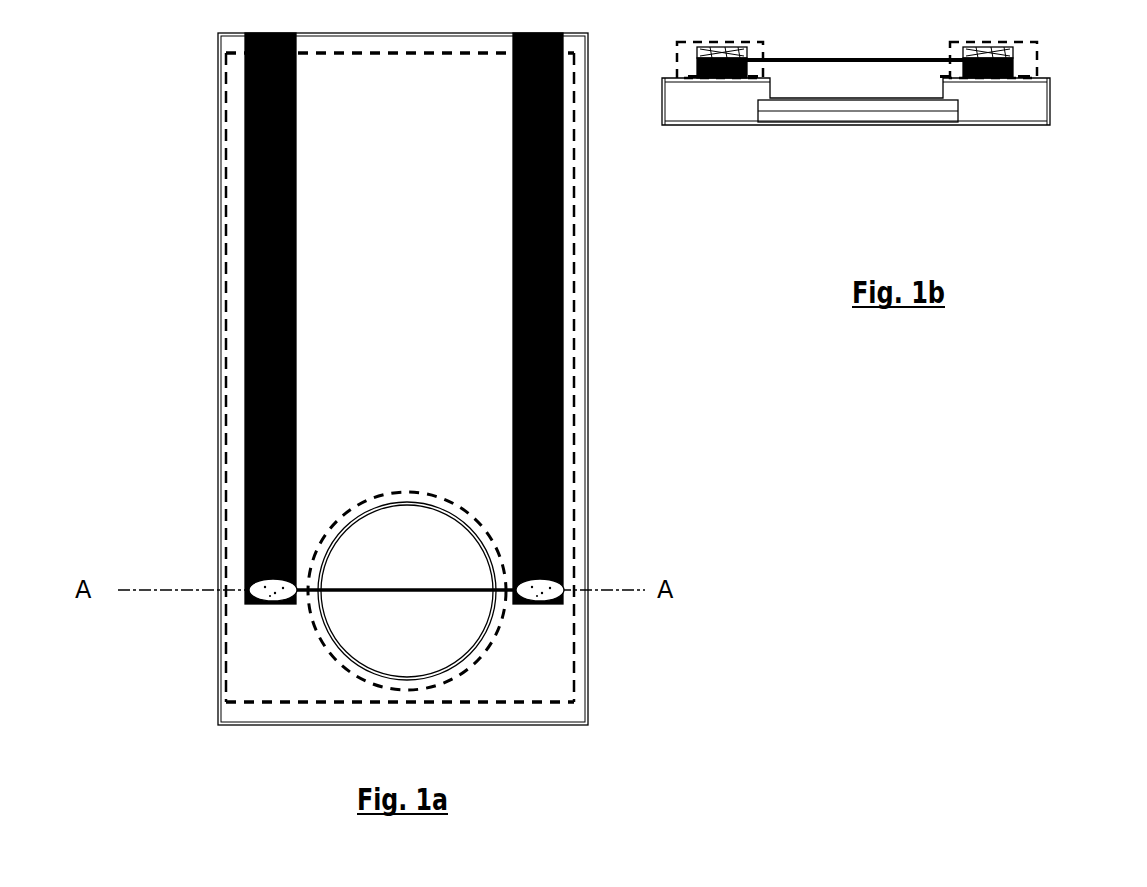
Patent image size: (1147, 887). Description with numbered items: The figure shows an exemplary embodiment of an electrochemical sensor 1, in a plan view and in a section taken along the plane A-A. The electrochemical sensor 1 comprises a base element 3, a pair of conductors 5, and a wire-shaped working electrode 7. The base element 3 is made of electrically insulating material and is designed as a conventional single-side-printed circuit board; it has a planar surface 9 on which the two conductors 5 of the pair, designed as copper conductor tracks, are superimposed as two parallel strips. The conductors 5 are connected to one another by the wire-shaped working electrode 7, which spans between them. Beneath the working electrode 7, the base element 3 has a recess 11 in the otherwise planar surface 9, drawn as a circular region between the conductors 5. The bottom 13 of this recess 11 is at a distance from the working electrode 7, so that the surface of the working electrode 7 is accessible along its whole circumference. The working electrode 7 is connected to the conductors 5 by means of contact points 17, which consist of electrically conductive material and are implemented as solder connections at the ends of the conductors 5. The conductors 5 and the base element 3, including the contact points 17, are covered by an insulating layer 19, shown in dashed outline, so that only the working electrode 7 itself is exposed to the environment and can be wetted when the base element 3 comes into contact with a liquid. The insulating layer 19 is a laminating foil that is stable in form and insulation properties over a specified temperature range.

In FIG. 1A, the electrochemical sensor 1 is at (165, 332).
In FIG. 1A, the base element 3 is at (357, 712).
In FIG. 1B, the base element 3 is at (856, 101).
In FIG. 1A, the conductors 5 is at (248, 216).
In FIG. 1B, the conductors 5 is at (983, 78).
In FIG. 1A, the wire-shaped working electrode 7 is at (417, 593).
In FIG. 1B, the wire-shaped working electrode 7 is at (805, 62).
In FIG. 1A, the planar surface 9 is at (403, 148).
In FIG. 1A, the recess 11 is at (425, 552).
In FIG. 1A, the bottom of recess 13 is at (407, 591).
In FIG. 1B, the bottom of recess 13 is at (858, 97).
In FIG. 1A, the contact points 17 is at (266, 584).
In FIG. 1B, the contact points 17 is at (1013, 60).
In FIG. 1A, the insulating layer 19 is at (292, 670).
In FIG. 1B, the insulating layer 19 is at (683, 47).